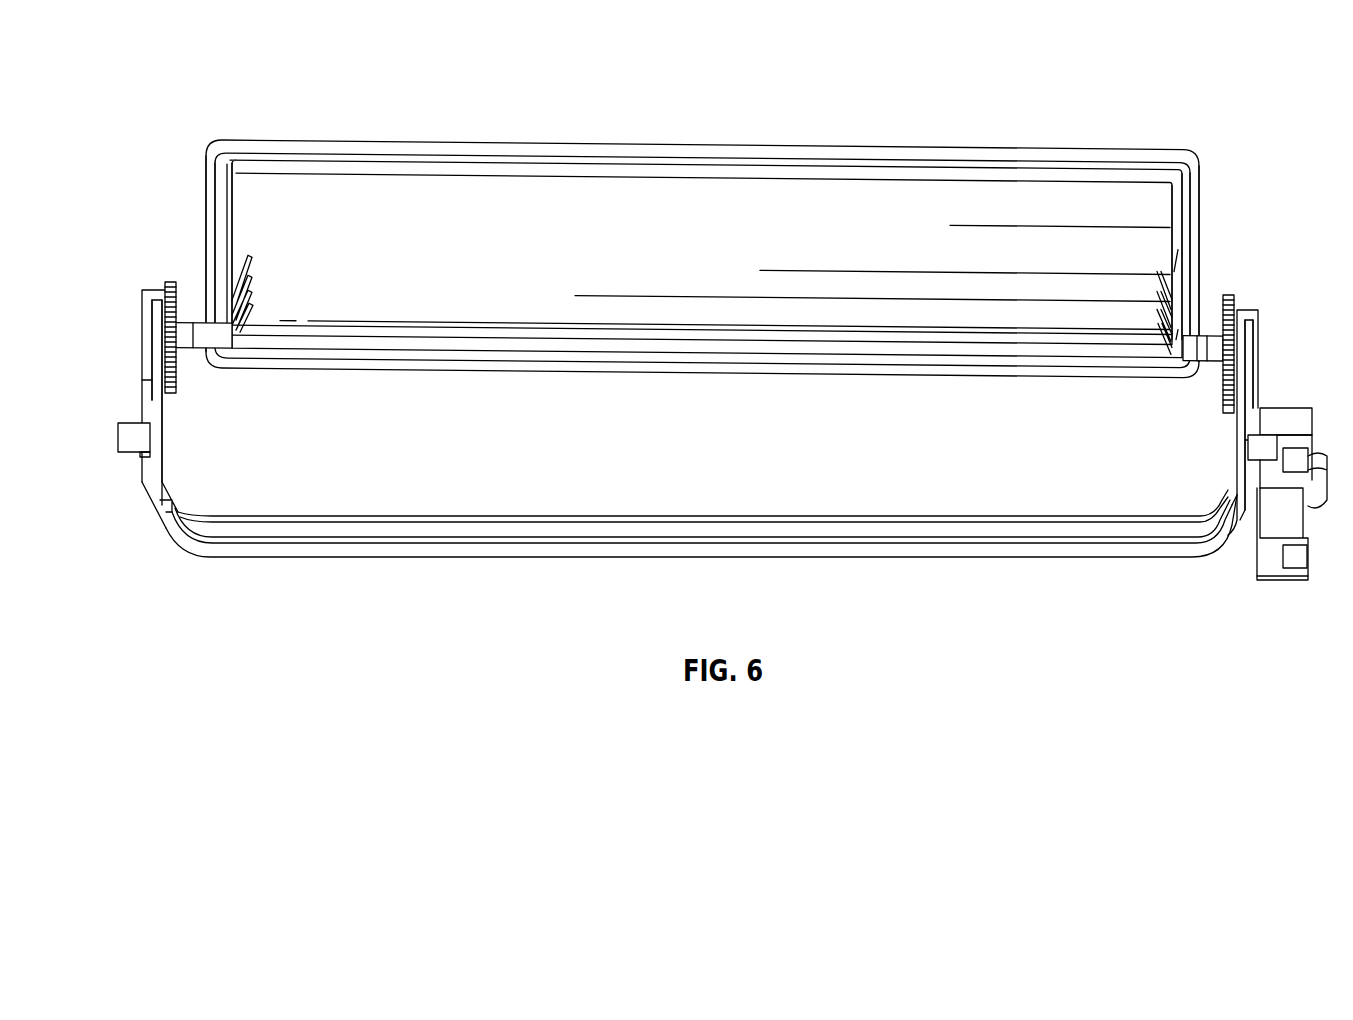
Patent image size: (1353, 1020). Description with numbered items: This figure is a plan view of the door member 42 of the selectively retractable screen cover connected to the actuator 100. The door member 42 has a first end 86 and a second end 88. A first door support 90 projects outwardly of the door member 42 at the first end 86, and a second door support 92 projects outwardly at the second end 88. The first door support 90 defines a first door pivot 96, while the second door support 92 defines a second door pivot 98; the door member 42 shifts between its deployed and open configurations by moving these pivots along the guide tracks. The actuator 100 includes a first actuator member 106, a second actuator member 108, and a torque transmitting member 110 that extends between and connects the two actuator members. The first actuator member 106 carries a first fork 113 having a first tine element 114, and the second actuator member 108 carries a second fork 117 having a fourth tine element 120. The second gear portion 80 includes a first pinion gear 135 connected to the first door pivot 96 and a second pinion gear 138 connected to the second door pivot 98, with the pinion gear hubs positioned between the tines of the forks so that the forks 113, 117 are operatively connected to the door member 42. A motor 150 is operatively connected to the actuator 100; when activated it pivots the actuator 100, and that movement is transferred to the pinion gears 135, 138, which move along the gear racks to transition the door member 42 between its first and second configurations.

The door member 42 is at (258, 130).
The second gear portion 80 is at (1237, 384).
The first end 86 is at (1197, 180).
The second end 88 is at (204, 190).
The first door support 90 is at (1180, 290).
The second door support 92 is at (225, 270).
The first door pivot 96 is at (1195, 360).
The second door pivot 98 is at (200, 345).
The actuator 100 is at (701, 543).
The first actuator member 106 is at (1228, 497).
The second actuator member 108 is at (162, 455).
The torque transmitting member 110 is at (643, 514).
The first fork 113 is at (1243, 410).
The first tine element 114 is at (1246, 350).
The second fork 117 is at (156, 400).
The fourth tine element 120 is at (152, 324).
The first pinion gear 135 is at (1236, 305).
The second pinion gear 138 is at (170, 282).
The motor 150 is at (1281, 587).